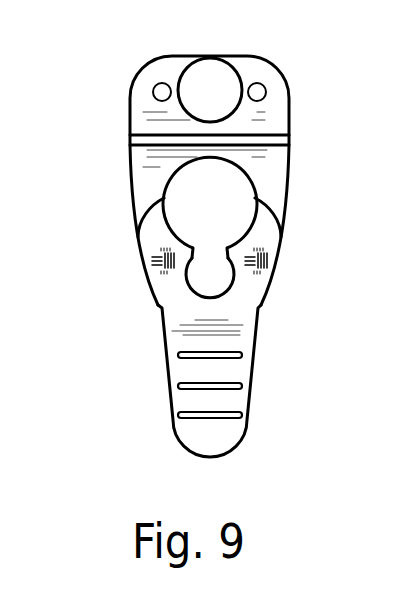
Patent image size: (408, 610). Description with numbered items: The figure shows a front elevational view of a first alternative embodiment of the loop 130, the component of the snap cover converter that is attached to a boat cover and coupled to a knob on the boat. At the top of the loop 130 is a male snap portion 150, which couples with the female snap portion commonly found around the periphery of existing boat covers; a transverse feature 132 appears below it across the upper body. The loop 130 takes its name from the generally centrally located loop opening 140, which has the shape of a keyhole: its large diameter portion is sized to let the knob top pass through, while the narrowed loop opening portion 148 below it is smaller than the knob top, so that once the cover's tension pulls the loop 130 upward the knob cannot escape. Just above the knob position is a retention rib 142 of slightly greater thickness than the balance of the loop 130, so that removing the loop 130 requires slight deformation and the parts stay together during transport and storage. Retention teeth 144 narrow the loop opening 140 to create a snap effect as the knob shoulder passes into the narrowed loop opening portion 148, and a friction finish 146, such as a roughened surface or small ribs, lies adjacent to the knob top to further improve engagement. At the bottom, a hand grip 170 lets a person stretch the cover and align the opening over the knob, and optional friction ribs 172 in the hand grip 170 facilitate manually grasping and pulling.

The loop 130 is at (290, 121).
The fold line 132 is at (130, 135).
The loop opening 140 is at (261, 181).
The retention rib 142 is at (283, 213).
The retention teeth 144 is at (241, 248).
The friction finish 146 is at (270, 264).
The narrowed loop opening portion 148 is at (223, 282).
The male snap portion 150 is at (230, 86).
The hand grip 170 is at (189, 454).
The friction ribs 172 is at (243, 386).